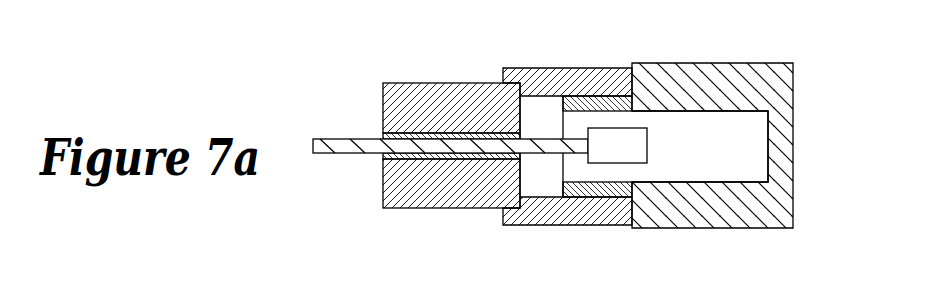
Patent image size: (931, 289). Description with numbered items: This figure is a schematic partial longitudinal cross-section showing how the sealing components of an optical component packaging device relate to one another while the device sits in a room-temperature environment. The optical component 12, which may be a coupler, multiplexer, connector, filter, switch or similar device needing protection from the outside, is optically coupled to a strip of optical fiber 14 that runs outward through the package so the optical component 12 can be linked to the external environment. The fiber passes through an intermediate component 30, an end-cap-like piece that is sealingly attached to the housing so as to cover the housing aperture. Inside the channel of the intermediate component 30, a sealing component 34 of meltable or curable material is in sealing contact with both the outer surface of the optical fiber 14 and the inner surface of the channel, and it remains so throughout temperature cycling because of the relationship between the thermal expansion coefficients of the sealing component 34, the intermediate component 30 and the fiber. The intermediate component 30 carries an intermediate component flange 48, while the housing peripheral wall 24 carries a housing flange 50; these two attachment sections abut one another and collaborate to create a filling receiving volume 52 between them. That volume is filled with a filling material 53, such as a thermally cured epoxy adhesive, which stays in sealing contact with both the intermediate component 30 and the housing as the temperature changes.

The strip of optical fiber 14 is at (338, 138).
The intermediate component 30 is at (458, 98).
The intermediate component flange 48 is at (523, 210).
The housing peripheral wall 24 is at (713, 82).
The housing flange 50 is at (618, 183).
The filling material 53 is at (598, 100).
The filling receiving volume 52 is at (620, 193).
The sealing component 34 is at (437, 157).
The optical component 12 is at (605, 145).